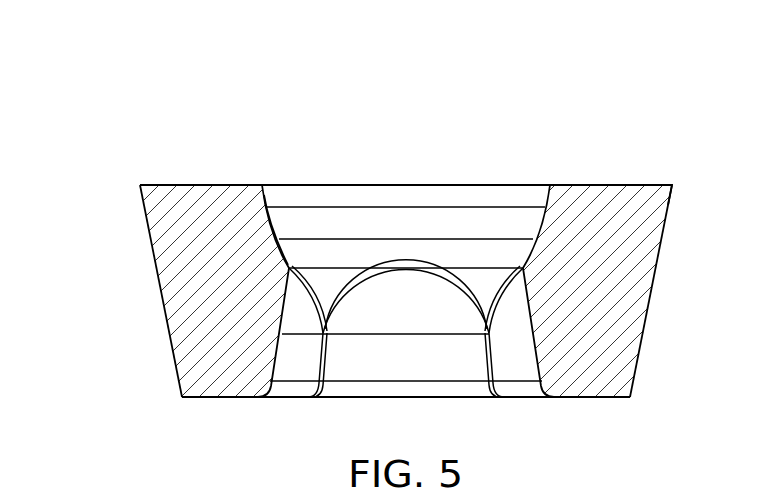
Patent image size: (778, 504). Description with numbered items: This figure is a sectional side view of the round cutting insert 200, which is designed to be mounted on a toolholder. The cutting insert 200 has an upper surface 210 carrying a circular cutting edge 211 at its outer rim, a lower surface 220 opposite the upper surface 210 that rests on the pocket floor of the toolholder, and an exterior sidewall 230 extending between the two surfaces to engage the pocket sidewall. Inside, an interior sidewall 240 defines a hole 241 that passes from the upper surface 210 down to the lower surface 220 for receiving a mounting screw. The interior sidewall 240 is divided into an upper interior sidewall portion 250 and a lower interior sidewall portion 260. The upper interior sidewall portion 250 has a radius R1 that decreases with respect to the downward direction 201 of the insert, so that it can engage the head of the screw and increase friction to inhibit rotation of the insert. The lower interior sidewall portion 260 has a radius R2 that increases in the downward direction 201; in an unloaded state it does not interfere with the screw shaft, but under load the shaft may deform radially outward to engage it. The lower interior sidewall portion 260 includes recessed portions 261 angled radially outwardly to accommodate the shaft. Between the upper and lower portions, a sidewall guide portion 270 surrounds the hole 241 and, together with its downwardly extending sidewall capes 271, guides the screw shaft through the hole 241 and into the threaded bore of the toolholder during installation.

The cutting insert 200 is at (108, 128).
The downward direction 201 is at (405, 152).
The upper surface 210 is at (636, 185).
The circular cutting edge 211 is at (672, 185).
The lower surface 220 is at (598, 398).
The exterior sidewall 230 is at (655, 290).
The interior sidewall 240 is at (293, 258).
The hole 241 is at (455, 162).
The upper interior sidewall portion 250 is at (286, 207).
The lower interior sidewall portion 260 is at (275, 368).
The recessed portions 261 is at (427, 373).
The sidewall guide portion 270 is at (459, 285).
The downwardly extending sidewall capes 271 is at (327, 302).
The radius of upper interior sidewall portion R1 is at (280, 239).
The radius of lower interior sidewall portion R2 is at (282, 334).